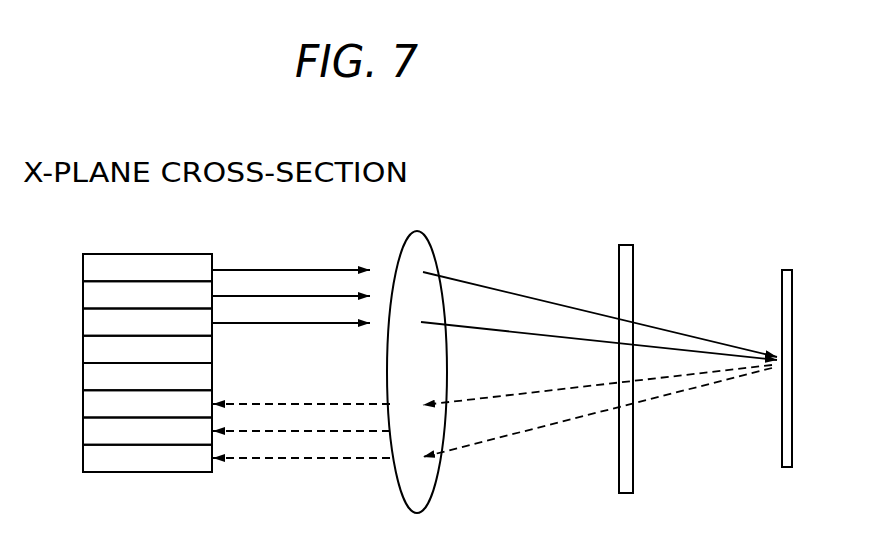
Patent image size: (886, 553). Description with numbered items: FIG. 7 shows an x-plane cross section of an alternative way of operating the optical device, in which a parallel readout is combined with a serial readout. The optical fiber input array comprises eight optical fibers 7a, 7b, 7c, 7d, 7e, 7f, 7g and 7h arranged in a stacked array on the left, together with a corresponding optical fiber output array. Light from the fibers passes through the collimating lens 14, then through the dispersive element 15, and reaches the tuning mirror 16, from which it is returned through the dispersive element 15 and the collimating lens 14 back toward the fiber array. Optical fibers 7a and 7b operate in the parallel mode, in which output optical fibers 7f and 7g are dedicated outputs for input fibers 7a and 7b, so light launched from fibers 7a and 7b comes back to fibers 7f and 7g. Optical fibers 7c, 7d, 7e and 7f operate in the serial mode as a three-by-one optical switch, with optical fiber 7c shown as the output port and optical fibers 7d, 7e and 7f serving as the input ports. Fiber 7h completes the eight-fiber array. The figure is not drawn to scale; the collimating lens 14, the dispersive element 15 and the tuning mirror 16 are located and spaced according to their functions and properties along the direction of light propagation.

The optical fiber a 7a is at (226, 269).
The optical fiber b 7b is at (226, 296).
The optical fiber c 7c is at (226, 324).
The optical fiber d 7d is at (147, 350).
The optical fiber e 7e is at (147, 377).
The optical fiber f 7f is at (236, 404).
The optical fiber g 7g is at (236, 432).
The optical fiber h 7h is at (236, 459).
The collimating lens 14 is at (427, 244).
The dispersive element 15 is at (628, 244).
The tuning mirror 16 is at (787, 269).